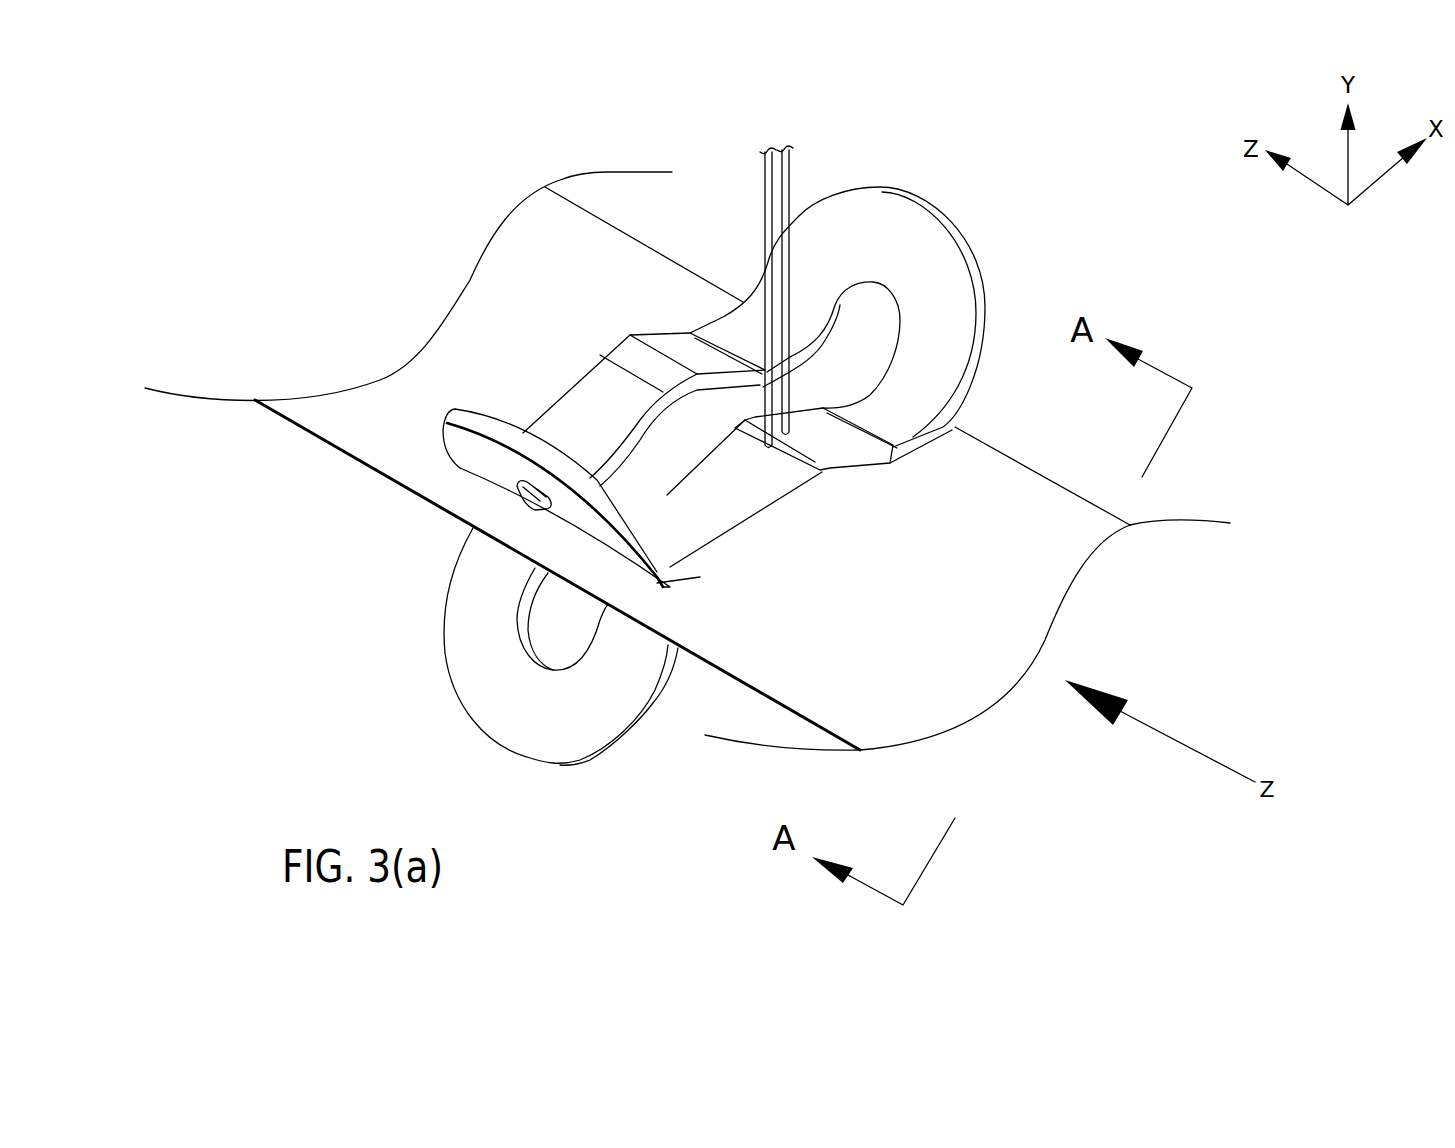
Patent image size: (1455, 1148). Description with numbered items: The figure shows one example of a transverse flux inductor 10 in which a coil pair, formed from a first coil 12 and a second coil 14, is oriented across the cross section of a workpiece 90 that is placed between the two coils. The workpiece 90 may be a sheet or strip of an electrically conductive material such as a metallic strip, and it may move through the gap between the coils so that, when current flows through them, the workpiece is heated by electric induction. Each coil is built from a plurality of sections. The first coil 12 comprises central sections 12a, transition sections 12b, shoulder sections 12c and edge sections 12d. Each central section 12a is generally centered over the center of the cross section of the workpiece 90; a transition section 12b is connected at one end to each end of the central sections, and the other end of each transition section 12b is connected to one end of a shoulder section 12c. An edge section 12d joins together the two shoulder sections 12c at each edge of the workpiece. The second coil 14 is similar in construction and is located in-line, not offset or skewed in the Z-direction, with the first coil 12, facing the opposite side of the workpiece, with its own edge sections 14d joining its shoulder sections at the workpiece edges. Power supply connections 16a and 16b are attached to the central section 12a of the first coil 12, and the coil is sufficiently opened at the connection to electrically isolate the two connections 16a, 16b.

The transverse flux inductor 10 is at (1097, 120).
The first coil 12 is at (727, 380).
The central sections 12a is at (623, 352).
The transition sections 12b is at (678, 347).
The shoulder sections 12c is at (733, 330).
The edge sections 12d is at (863, 212).
The second coil 14 is at (486, 651).
The edge sections 14d is at (495, 718).
The power supply connection 16a is at (787, 180).
The power supply connection 16b is at (762, 188).
The workpiece 90 is at (917, 667).